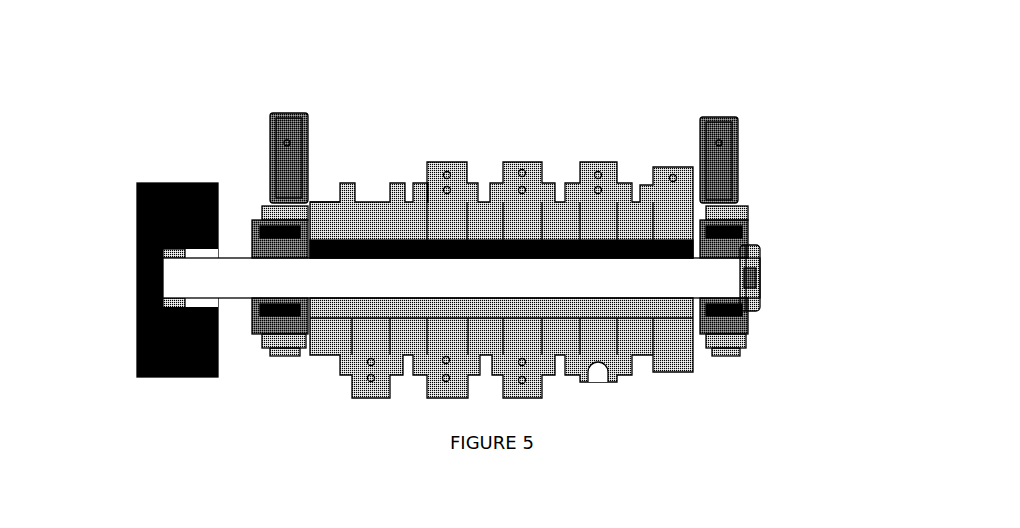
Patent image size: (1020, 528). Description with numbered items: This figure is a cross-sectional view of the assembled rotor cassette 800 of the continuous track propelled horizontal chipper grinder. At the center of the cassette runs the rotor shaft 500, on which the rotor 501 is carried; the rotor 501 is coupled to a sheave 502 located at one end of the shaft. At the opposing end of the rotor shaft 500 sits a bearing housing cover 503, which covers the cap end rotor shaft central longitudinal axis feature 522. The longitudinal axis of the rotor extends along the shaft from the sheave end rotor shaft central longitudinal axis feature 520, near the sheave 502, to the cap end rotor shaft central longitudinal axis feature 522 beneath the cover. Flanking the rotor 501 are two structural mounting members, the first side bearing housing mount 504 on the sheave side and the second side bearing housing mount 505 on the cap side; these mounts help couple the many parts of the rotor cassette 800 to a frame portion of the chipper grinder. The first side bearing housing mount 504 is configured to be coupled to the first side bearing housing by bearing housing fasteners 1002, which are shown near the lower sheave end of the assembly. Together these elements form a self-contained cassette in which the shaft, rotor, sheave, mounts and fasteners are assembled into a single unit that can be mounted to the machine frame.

The rotor cassette 800 is at (617, 84).
The rotor shaft 500 is at (705, 272).
The rotor 501 is at (490, 126).
The sheave 502 is at (122, 241).
The bearing housing cover 503 is at (763, 278).
The first side bearing housing mount 504 is at (272, 112).
The second side bearing housing mount 505 is at (745, 111).
The sheave end rotor shaft central longitudinal axis feature 520 is at (172, 279).
The cap end rotor shaft central longitudinal axis feature 522 is at (742, 280).
The bearing housing fasteners 1002 is at (252, 340).